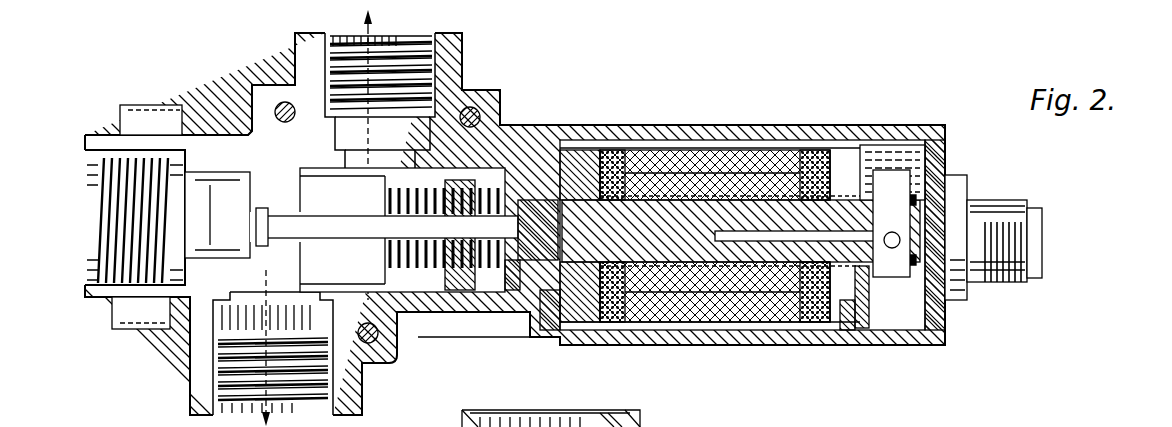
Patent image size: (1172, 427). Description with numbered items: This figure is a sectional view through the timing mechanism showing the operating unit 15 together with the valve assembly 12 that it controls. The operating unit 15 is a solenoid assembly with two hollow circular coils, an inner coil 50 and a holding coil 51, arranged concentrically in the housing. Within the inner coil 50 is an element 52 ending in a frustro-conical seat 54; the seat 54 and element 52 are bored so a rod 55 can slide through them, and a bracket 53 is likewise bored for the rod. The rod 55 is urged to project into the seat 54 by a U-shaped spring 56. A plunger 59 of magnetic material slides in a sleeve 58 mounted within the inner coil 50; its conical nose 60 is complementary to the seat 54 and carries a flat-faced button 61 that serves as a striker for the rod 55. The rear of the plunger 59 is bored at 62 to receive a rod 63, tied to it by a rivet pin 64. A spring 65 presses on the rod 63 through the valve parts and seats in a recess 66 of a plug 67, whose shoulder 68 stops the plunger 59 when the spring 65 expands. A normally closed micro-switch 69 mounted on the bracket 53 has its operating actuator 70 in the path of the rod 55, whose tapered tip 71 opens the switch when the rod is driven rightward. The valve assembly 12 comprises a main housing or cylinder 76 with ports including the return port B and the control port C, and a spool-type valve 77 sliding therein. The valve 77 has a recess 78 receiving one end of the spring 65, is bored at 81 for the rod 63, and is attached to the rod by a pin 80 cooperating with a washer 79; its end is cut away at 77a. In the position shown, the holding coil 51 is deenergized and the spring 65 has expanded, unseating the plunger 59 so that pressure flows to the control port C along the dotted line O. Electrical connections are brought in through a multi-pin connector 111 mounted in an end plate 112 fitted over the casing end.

The valve assembly 12 is at (126, 338).
The operating unit 15 is at (645, 337).
The inner coil 50 is at (808, 296).
The holding coil 51 is at (825, 325).
The element 52 is at (775, 264).
The bracket 53 is at (868, 330).
The frustro-conical seat 54 is at (718, 250).
The rod 55 is at (812, 170).
The U-shaped spring 56 is at (869, 272).
The sleeve 58 is at (672, 196).
The plunger 59 is at (553, 337).
The conical nose 60 is at (718, 192).
The button 61 is at (722, 226).
The bore 62 is at (598, 180).
The rod 63 is at (530, 165).
The rivet pin 64 is at (527, 300).
The spring 65 is at (470, 200).
The recess 66 is at (473, 288).
The plug 67 is at (557, 162).
The shoulder 68 is at (513, 288).
The micro-switch 69 is at (905, 180).
The operating actuator 70 is at (892, 249).
The tapered tip 71 is at (893, 214).
The main housing or cylinder 76 is at (93, 289).
The spool-type valve 77 is at (228, 262).
The cut-away portions 77a is at (190, 242).
The recess 78 is at (452, 182).
The washer 79 is at (268, 197).
The pin 80 is at (242, 192).
The bore 81 is at (400, 318).
The electrical multi-pin connector 111 is at (1010, 285).
The end plate 112 is at (947, 340).
The return port B is at (83, 182).
The control port C is at (417, 60).
The dotted line o—o O is at (372, 10).